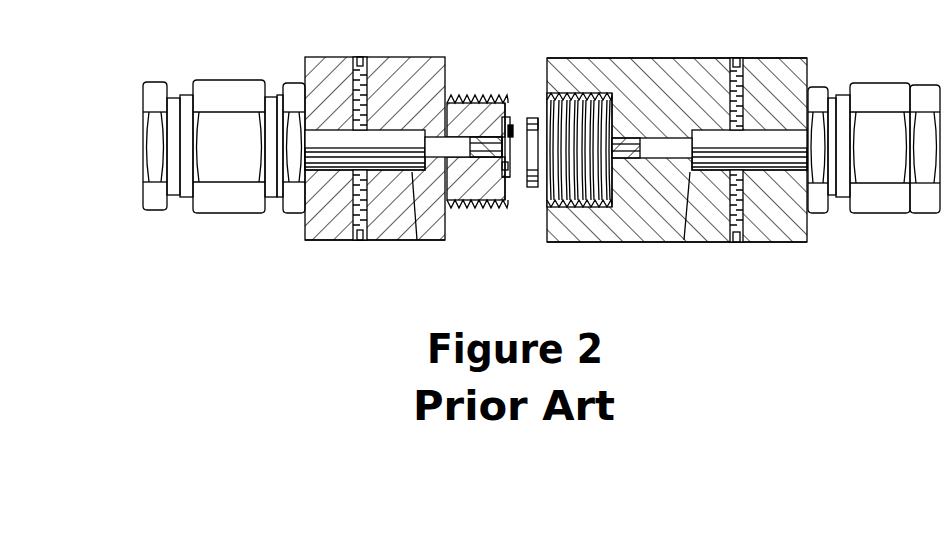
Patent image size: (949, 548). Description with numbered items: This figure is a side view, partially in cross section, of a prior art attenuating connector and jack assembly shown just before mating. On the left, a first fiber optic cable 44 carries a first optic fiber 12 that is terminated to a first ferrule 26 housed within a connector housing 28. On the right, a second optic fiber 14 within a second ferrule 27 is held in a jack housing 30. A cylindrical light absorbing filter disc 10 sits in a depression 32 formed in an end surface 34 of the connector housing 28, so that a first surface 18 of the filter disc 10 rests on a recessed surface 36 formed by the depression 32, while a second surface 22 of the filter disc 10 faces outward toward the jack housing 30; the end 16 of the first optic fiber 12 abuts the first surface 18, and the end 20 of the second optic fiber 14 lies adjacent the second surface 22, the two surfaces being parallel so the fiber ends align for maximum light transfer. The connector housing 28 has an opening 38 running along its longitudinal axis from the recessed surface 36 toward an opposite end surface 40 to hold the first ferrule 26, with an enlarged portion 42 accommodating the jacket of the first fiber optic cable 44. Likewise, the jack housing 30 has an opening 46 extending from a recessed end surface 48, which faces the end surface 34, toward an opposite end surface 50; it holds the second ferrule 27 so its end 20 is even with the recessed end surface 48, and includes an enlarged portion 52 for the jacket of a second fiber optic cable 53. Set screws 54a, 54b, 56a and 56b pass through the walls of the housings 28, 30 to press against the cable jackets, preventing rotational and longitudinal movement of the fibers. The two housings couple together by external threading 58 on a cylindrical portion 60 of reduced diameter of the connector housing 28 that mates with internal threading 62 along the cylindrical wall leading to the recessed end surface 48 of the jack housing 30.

The light absorbing filter disc 10 is at (531, 183).
The first optic fiber 12 is at (468, 147).
The second optic fiber 14 is at (643, 147).
The end of first optic fiber 16 is at (510, 128).
The first surface of filter disc 18 is at (520, 131).
The end of second optic fiber 20 is at (614, 136).
The second surface of filter disc 22 is at (532, 118).
The first ferrule 26 is at (365, 158).
The second ferrule 27 is at (689, 157).
The connector housing 28 is at (307, 243).
The jack housing 30 is at (803, 243).
The depression 32 is at (510, 177).
The end surface of connector housing 34 is at (508, 204).
The recessed surface 36 is at (502, 165).
The opening of connector housing 38 is at (448, 96).
The opposite end surface of connector housing 40 is at (303, 227).
The enlarged portion of opening 42 is at (415, 241).
The first fiber optic cable 44 is at (387, 138).
The opening of jack housing 46 is at (650, 128).
The recessed end surface of jack housing 48 is at (612, 242).
The opposite end surface of jack housing 50 is at (807, 232).
The enlarged portion of jack opening 52 is at (684, 242).
The second fiber optic cable 53 is at (768, 172).
The set screw 54a is at (360, 57).
The set screw 54b is at (350, 242).
The set screw 56a is at (737, 67).
The set screw 56b is at (742, 237).
The external threading 58 is at (500, 97).
The cylindrical portion of reduced diameter 60 is at (477, 195).
The internal threading 62 is at (542, 117).